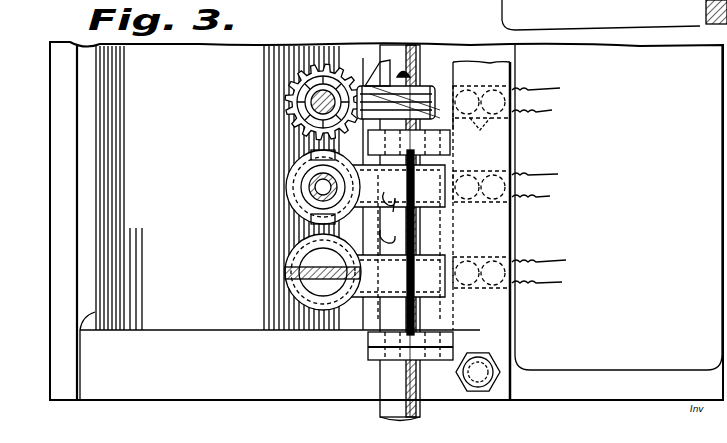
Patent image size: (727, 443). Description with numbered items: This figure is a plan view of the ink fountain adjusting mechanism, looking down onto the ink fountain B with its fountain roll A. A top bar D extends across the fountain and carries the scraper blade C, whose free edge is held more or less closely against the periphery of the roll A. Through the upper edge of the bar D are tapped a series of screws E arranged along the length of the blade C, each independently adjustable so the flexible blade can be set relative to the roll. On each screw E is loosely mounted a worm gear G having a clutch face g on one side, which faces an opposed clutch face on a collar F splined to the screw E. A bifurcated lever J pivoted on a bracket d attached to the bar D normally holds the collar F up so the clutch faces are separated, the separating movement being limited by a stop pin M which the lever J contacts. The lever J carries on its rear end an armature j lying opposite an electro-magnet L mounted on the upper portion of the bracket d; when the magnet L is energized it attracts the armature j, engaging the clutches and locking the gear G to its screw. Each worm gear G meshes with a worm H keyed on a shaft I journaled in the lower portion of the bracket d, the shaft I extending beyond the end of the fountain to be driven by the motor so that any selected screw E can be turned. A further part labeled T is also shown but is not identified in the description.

The fountain roll A is at (386, 221).
The ink fountain B is at (72, 220).
The scraper blade C is at (601, 15).
The top bar D is at (448, 400).
The screw E is at (300, 176).
The collar F is at (290, 198).
The worm gear G is at (290, 100).
The clutch face g is at (312, 108).
The worm H is at (369, 86).
The shaft I is at (408, 66).
The bifurcated lever J is at (395, 212).
The electro-magnet L is at (480, 262).
The stop pin M is at (416, 252).
The bracket T is at (538, 110).
The bracket d is at (468, 338).
The armature j is at (512, 122).